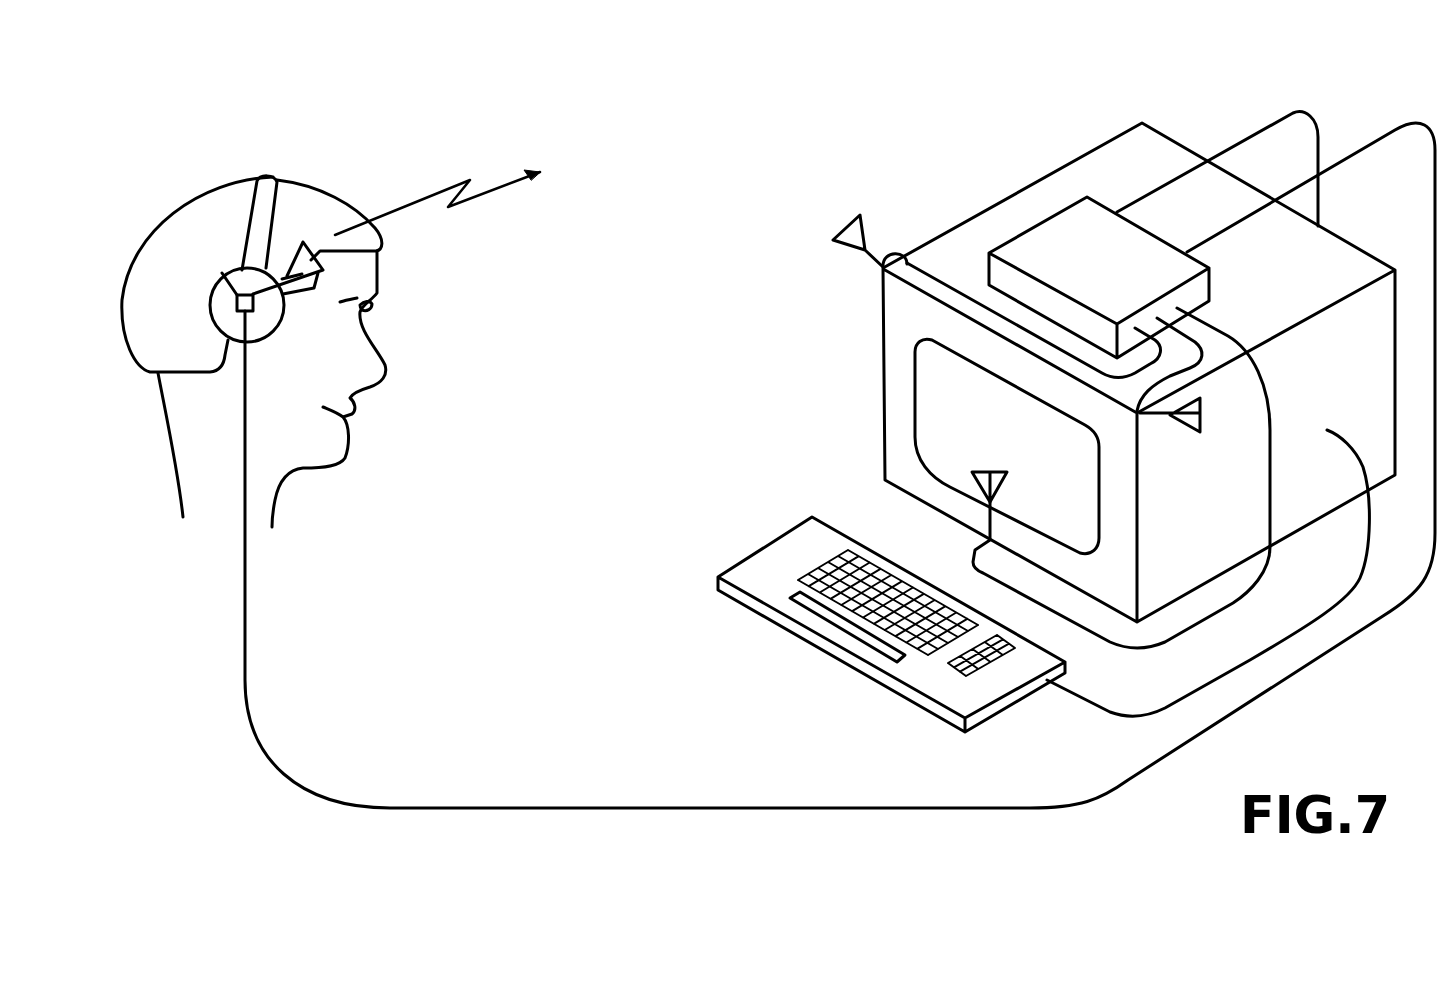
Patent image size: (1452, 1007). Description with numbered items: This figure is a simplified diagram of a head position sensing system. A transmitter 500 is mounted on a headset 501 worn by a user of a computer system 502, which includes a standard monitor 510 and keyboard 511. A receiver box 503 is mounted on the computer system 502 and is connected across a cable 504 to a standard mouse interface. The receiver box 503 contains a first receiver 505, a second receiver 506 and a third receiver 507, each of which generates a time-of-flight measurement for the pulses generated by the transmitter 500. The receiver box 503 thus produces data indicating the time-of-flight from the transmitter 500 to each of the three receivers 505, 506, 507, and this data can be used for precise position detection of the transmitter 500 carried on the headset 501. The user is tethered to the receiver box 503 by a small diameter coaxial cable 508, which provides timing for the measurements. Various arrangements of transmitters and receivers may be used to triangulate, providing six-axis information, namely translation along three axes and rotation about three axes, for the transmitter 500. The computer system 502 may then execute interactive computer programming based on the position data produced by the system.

The transmitter 500 is at (237, 292).
The headset 501 is at (265, 177).
The computer system 502 is at (1073, 182).
The receiver box 503 is at (1041, 238).
The cable 504 is at (1257, 132).
The first receiver 505 is at (848, 232).
The second receiver 506 is at (1190, 435).
The third receiver 507 is at (972, 475).
The small diameter coaxial cable 508 is at (573, 807).
The monitor 510 is at (937, 385).
The keyboard 511 is at (783, 552).